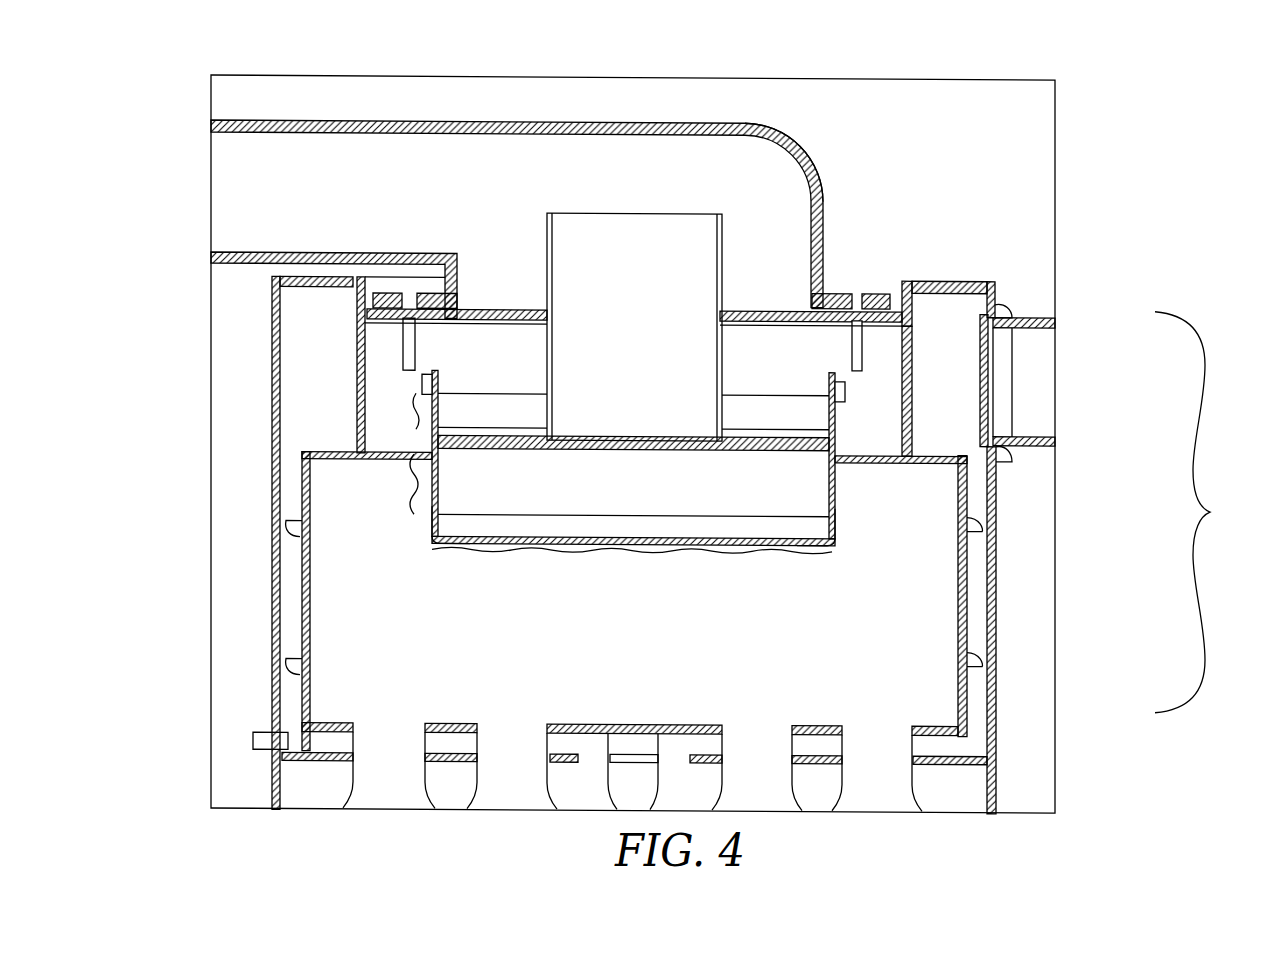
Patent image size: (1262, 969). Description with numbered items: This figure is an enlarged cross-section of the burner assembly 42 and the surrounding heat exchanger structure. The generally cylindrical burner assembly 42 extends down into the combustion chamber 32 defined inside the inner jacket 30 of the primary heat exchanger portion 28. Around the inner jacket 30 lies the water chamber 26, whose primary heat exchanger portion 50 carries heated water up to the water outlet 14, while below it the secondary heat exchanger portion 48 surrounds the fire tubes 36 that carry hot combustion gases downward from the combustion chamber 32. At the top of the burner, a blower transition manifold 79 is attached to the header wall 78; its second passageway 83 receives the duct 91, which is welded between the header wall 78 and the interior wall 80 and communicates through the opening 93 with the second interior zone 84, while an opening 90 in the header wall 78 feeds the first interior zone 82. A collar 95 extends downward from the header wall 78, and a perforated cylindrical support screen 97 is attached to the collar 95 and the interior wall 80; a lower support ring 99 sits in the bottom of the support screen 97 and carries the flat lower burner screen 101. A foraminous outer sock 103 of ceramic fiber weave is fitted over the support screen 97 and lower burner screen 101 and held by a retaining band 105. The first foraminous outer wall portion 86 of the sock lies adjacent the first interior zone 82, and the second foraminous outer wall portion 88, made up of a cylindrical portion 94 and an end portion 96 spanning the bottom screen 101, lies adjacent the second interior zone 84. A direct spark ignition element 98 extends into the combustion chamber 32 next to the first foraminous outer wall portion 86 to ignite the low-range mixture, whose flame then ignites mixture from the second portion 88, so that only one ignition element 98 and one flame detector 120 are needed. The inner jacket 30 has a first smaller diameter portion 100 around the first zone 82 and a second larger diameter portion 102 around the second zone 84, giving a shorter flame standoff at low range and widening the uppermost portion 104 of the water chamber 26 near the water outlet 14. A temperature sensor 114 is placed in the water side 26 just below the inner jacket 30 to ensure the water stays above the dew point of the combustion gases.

The water outlet 14 is at (1057, 406).
The water chamber 26 is at (1034, 515).
The primary heat exchanger portion 28 is at (1196, 513).
The inner jacket 30 is at (1039, 527).
The combustion chamber 32 is at (747, 620).
The fire tubes 36 is at (512, 789).
The burner assembly 42 is at (905, 313).
The secondary heat exchanger portion of water side 48 is at (972, 792).
The primary heat exchanger portion of water side 50 is at (977, 675).
The header wall 78 is at (770, 304).
The blower transition manifold 79 is at (470, 118).
The interior wall 80 is at (773, 441).
The first interior zone 82 is at (507, 424).
The second passageway 83 is at (715, 167).
The second interior zone 84 is at (542, 493).
The first foraminous outer wall portion 86 is at (413, 405).
The second foraminous outer wall portion 88 is at (462, 509).
The opening in header wall 90 is at (518, 304).
The duct 91 is at (722, 225).
The opening in divider wall 93 is at (663, 439).
The cylindrical portion 94 is at (413, 480).
The collar 95 is at (441, 333).
The end portion 96 is at (455, 549).
The support screen 97 is at (437, 490).
The direct spark ignition element 98 is at (405, 365).
The lower support ring 99 is at (822, 532).
The first smaller diameter portion 100 is at (915, 395).
The lower burner screen 101 is at (620, 541).
The second larger diameter portion 102 is at (963, 631).
The foraminous outer sock 103 is at (432, 518).
The uppermost portion of water chamber 104 is at (953, 325).
The retaining band 105 is at (845, 383).
The temperature sensor 114 is at (253, 740).
The flame detector 120 is at (905, 353).